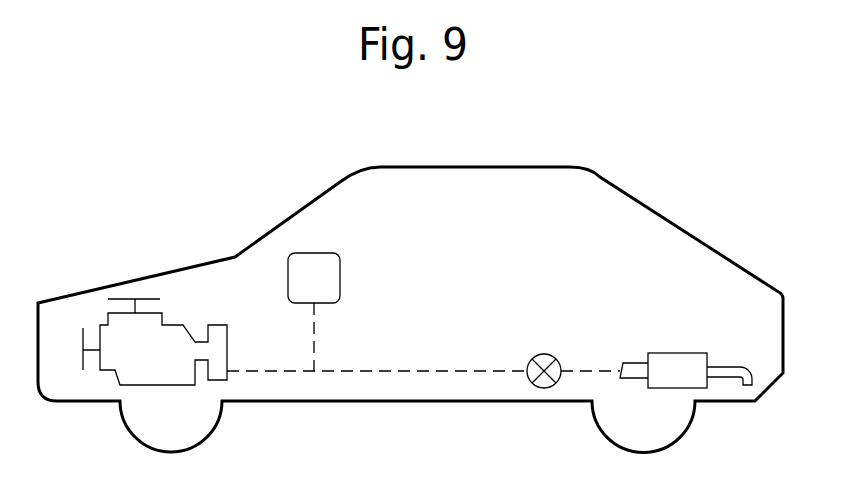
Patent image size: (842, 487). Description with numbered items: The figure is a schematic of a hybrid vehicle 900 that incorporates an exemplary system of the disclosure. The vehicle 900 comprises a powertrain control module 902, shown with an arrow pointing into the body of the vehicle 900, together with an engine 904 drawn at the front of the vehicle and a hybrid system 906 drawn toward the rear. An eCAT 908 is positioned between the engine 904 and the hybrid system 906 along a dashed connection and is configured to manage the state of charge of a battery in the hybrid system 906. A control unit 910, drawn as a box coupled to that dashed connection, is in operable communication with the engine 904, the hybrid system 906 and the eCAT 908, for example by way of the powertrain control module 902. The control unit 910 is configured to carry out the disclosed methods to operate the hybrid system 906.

The vehicle 900 is at (267, 230).
The powertrain control module 902 is at (468, 283).
The engine 904 is at (143, 385).
The hybrid system 906 is at (690, 352).
The eCAT 908 is at (553, 355).
The control unit 910 is at (313, 250).